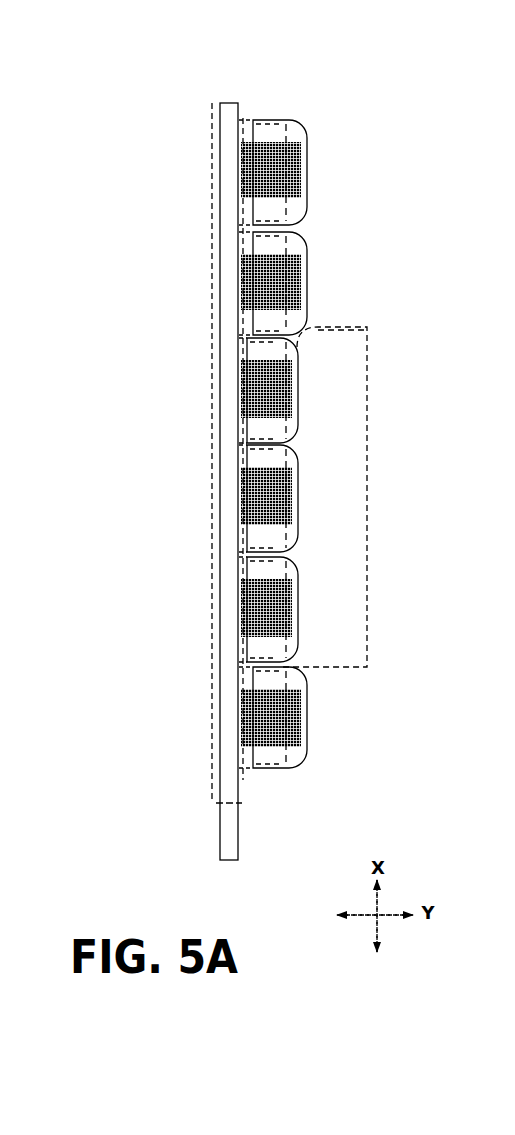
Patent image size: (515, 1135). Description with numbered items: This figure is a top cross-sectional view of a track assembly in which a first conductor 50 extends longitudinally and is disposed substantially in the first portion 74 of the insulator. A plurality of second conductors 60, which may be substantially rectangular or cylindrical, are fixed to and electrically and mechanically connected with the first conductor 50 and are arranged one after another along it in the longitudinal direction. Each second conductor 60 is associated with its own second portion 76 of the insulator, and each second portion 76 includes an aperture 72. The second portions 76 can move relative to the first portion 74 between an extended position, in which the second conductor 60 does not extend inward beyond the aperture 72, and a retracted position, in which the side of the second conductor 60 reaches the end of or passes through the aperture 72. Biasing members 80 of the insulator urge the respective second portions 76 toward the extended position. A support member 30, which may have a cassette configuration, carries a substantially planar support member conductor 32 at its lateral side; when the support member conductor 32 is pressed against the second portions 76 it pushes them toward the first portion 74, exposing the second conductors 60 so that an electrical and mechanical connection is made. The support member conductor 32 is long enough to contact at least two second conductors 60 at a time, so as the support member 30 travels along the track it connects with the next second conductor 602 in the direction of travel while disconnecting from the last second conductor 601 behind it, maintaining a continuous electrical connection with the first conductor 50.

The support member 30 is at (376, 532).
The support member conductor 32 is at (347, 375).
The first conductor 50 is at (232, 133).
The second conductor 60 is at (307, 208).
The last second conductor 601 is at (299, 638).
The next second conductor 602 is at (307, 312).
The aperture 72 is at (299, 171).
The first portion of the insulator 74 is at (213, 763).
The second portion of the insulator 76 is at (250, 120).
The biasing member 80 is at (262, 177).